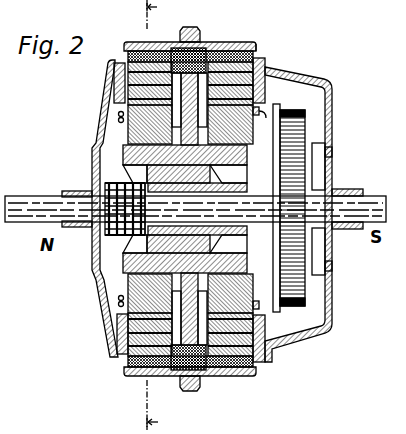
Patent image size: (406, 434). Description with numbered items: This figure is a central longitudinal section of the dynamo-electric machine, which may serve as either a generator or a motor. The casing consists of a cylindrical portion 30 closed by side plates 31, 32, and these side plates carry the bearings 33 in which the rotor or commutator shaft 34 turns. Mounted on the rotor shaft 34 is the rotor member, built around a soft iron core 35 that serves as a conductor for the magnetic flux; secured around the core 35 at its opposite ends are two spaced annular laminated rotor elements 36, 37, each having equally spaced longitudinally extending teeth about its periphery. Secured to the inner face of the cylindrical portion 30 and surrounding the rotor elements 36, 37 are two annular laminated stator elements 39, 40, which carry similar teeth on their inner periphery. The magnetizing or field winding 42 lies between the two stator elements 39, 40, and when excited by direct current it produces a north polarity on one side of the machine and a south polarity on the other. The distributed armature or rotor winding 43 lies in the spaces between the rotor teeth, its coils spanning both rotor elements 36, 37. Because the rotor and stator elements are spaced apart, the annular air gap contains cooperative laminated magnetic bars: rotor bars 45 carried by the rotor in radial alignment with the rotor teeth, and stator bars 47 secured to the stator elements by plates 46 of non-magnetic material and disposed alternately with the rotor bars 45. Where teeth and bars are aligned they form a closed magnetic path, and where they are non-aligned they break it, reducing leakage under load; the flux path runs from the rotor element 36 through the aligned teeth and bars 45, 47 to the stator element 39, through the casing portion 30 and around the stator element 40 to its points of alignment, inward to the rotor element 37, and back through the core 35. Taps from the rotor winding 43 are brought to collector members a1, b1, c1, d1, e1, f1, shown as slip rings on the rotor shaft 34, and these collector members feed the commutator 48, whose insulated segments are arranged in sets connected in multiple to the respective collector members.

The cylindrical portion 30 is at (228, 45).
The side plate 31 is at (103, 291).
The side plate 32 is at (334, 118).
The bearings 33 is at (335, 247).
The rotor shaft 34 is at (52, 186).
The soft iron core 35 is at (249, 247).
The rotor element 36 is at (128, 128).
The rotor element 37 is at (185, 168).
The stator element 39 is at (150, 49).
The stator element 40 is at (257, 54).
The field winding 42 is at (180, 378).
The rotor winding 43 is at (262, 208).
The magnetic bars 45 is at (262, 88).
The plates 46 is at (268, 90).
The stator bars 47 is at (204, 46).
The commutator 48 is at (300, 178).
The collector member a1 is at (89, 186).
The collector member b1 is at (110, 184).
The collector member c1 is at (122, 188).
The collector member d1 is at (130, 234).
The collector member e1 is at (125, 237).
The collector member f1 is at (143, 236).